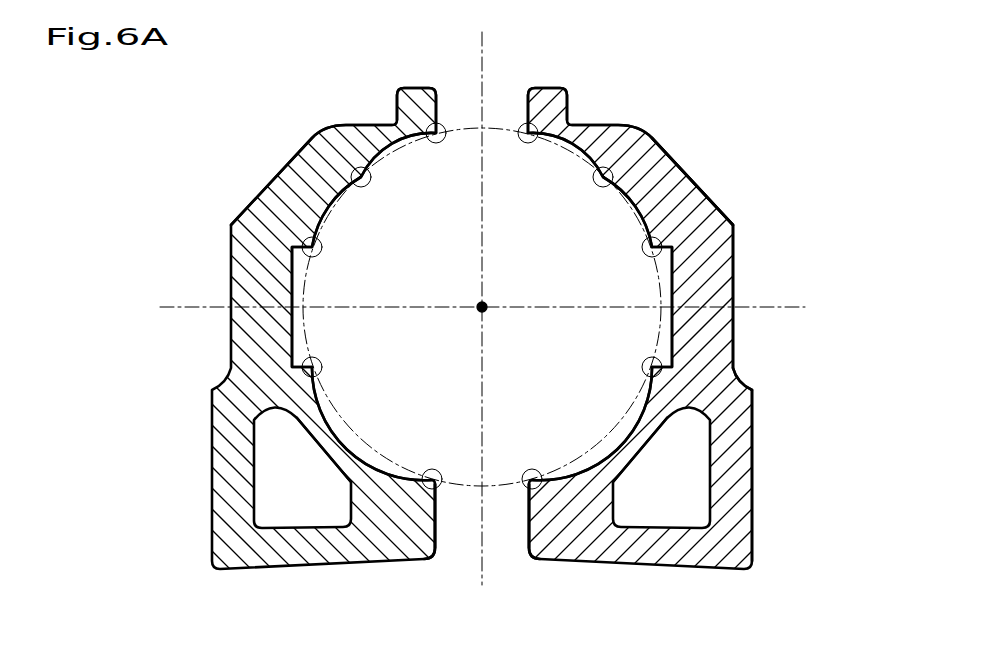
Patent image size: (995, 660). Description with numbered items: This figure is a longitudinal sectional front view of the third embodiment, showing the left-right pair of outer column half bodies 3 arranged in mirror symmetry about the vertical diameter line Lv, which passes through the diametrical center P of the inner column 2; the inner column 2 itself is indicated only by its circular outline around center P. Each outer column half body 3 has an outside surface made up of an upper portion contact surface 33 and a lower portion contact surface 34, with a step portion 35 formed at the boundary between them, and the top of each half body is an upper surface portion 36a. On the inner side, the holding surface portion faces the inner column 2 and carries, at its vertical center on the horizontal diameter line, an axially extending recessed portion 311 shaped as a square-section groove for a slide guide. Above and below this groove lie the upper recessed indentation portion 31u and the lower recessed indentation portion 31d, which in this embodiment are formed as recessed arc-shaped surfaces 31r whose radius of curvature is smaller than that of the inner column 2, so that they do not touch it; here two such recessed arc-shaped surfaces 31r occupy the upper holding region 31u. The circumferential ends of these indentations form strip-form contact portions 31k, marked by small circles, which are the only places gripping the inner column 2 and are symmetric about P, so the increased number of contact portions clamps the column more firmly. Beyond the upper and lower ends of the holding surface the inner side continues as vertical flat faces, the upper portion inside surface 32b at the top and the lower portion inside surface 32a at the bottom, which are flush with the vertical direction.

The inner column 2 is at (491, 120).
The outer column half body 3 is at (291, 155).
The strip-form contact portion 31k is at (433, 144).
The recessed arc-shaped surface 31r is at (409, 142).
The recessed portion 311 is at (292, 250).
The upper recessed indentation portion 31u is at (327, 190).
The lower recessed indentation portion 31d is at (372, 470).
The lower portion inside surface 32a is at (528, 508).
The upper portion inside surface 32b is at (528, 106).
The upper portion contact surface 33 is at (735, 287).
The lower portion contact surface 34 is at (752, 502).
The step portion 35 is at (745, 380).
The upper surface portion 36a is at (718, 208).
The vertical diameter line Lv is at (478, 48).
The diametrical center P is at (488, 306).